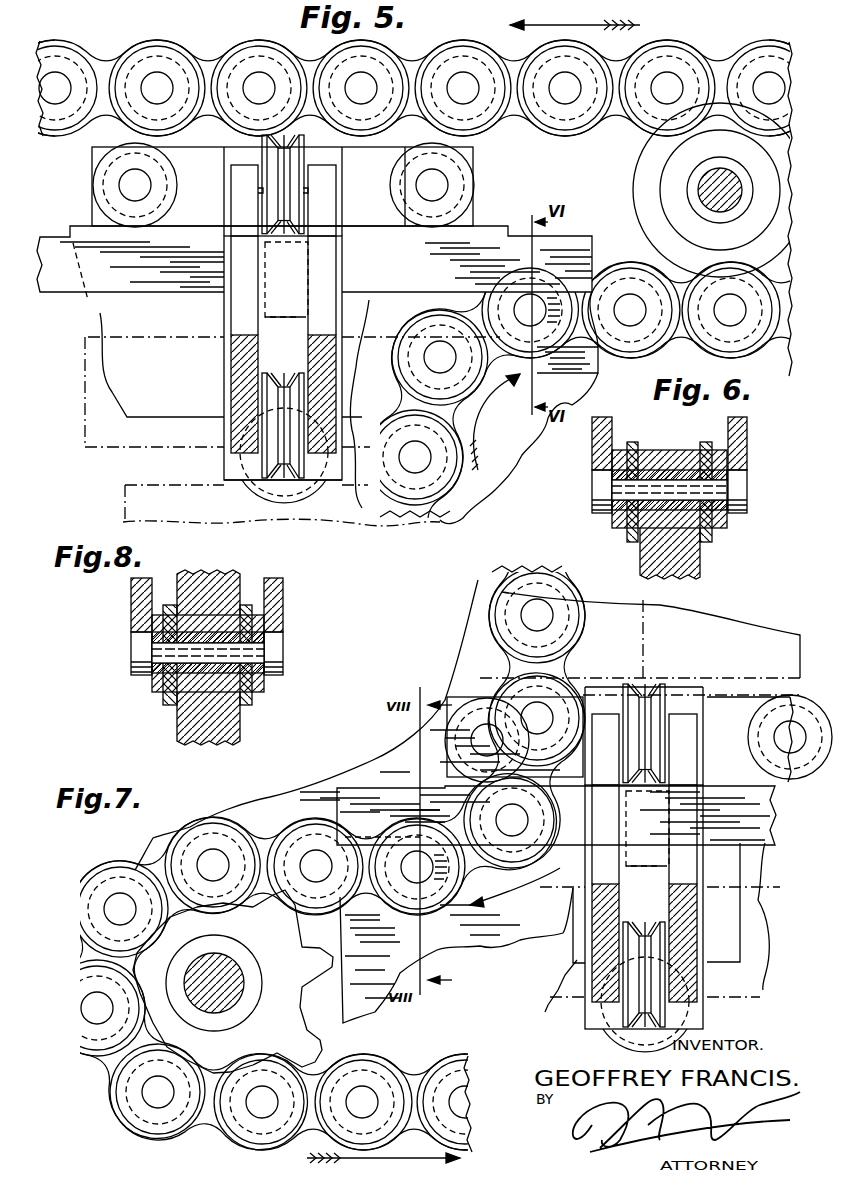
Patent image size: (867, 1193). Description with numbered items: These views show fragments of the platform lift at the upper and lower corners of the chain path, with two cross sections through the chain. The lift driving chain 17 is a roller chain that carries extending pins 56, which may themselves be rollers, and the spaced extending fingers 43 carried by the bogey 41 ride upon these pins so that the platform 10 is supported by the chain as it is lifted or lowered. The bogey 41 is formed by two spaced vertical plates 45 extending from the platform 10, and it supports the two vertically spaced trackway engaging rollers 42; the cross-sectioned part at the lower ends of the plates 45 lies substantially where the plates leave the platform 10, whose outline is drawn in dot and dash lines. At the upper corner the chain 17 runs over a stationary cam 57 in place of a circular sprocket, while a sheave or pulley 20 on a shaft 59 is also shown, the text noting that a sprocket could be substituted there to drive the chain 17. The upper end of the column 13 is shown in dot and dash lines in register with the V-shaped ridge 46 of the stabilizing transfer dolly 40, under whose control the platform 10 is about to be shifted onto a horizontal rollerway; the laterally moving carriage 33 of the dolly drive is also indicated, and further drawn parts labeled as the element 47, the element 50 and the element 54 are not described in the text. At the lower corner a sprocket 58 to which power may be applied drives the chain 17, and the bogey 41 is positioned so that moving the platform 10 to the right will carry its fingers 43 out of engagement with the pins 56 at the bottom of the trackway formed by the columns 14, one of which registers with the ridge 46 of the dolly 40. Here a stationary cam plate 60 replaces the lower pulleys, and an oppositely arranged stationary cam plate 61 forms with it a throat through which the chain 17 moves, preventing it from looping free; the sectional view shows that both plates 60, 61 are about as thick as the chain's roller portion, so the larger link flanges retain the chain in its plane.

In FIG. 5, the platform 10 is at (96, 402).
In FIG. 7, the platform 10 is at (765, 955).
In FIG. 5, the column 13 is at (125, 500).
In FIG. 7, the column 14 is at (700, 628).
In FIG. 5, the lift driving chain 17 is at (206, 72).
In FIG. 6, the lift driving chain 17 is at (660, 453).
In FIG. 8, the lift driving chain 17 is at (160, 690).
In FIG. 7, the lift driving chain 17 is at (97, 895).
In FIG. 5, the sheave or pulley 20 is at (645, 173).
In FIG. 5, the laterally moving carriage 33 is at (100, 315).
In FIG. 7, the laterally moving carriage 33 is at (766, 875).
In FIG. 5, the transfer dolly 40 is at (194, 160).
In FIG. 7, the transfer dolly 40 is at (620, 854).
In FIG. 5, the bogey 41 is at (245, 347).
In FIG. 7, the bogey 41 is at (665, 858).
In FIG. 5, the trackway engaging wheel or roller 42 is at (292, 150).
In FIG. 7, the trackway engaging wheel or roller 42 is at (656, 837).
In FIG. 5, the extending finger 43 is at (314, 259).
In FIG. 6, the extending finger 43 is at (598, 436).
In FIG. 8, the extending finger 43 is at (136, 603).
In FIG. 7, the extending finger 43 is at (742, 775).
In FIG. 5, the vertical plate 45 is at (233, 200).
In FIG. 7, the vertical plate 45 is at (638, 866).
In FIG. 5, the V-shaped ridge 46 is at (235, 463).
In FIG. 7, the V-shaped ridge 46 is at (675, 837).
In FIG. 5, the roller 47 is at (92, 185).
In FIG. 7, the roller 47 is at (470, 728).
In FIG. 5, the pulley path circle 50 is at (290, 490).
In FIG. 7, the pulley path circle 50 is at (640, 1007).
In FIG. 5, the plate 54 is at (300, 312).
In FIG. 7, the plate 54 is at (688, 830).
In FIG. 5, the extending pin 56 is at (548, 310).
In FIG. 6, the extending pin 56 is at (600, 487).
In FIG. 8, the extending pin 56 is at (136, 650).
In FIG. 7, the extending pin 56 is at (404, 867).
In FIG. 5, the stationary cam 57 is at (500, 432).
In FIG. 6, the stationary cam 57 is at (690, 562).
In FIG. 7, the sprocket 58 is at (233, 981).
In FIG. 5, the shaft 59 is at (705, 195).
In FIG. 8, the stationary cam plate 60 is at (197, 578).
In FIG. 7, the stationary cam plate 60 is at (372, 748).
In FIG. 8, the stationary cam plate 61 is at (225, 722).
In FIG. 7, the stationary cam plate 61 is at (468, 958).